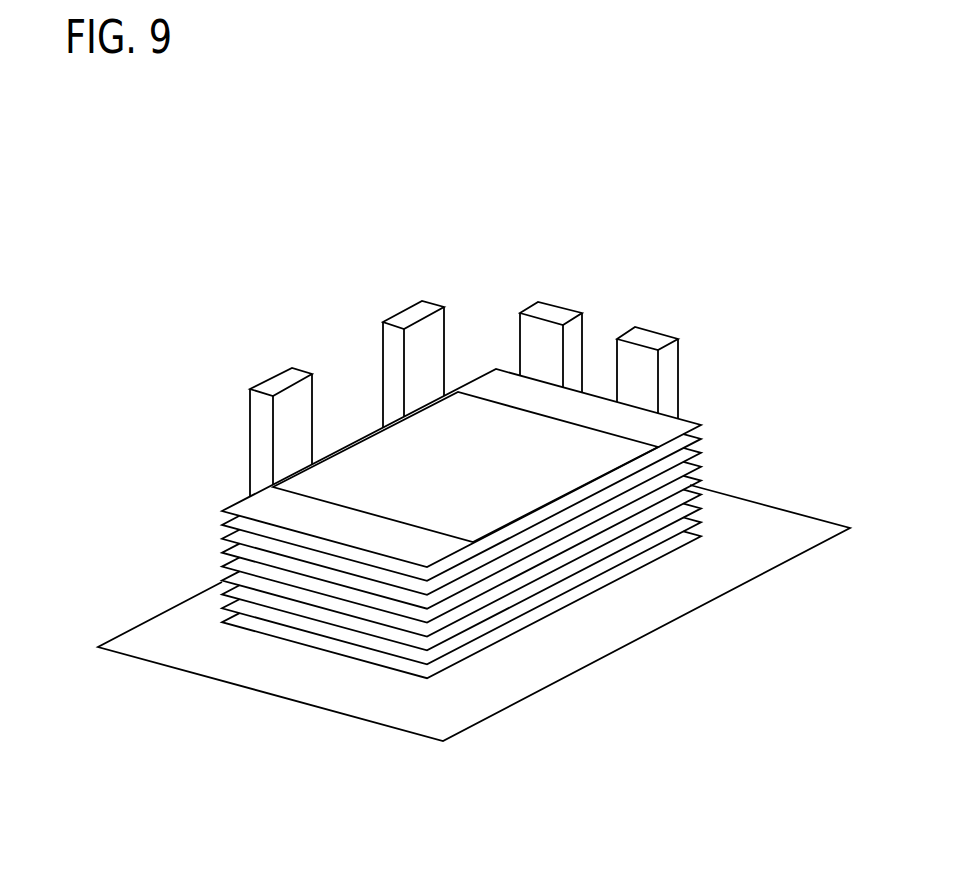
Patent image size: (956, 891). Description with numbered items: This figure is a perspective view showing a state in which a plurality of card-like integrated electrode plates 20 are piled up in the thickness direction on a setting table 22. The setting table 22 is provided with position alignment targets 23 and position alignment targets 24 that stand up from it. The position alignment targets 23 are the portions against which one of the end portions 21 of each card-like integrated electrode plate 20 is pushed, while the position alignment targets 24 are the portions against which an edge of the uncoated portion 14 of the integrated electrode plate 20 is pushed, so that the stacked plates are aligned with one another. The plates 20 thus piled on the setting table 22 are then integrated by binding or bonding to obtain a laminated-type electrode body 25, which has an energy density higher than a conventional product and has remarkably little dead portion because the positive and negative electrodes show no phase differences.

The uncoated portion 14 is at (461, 414).
The card-like integrated electrode plate 20 is at (698, 492).
The end portion 21 is at (357, 442).
The setting table 22 is at (610, 638).
The position alignment targets 23 is at (276, 388).
The position alignment targets 24 is at (552, 312).
The laminated-type electrode body 25 is at (468, 550).